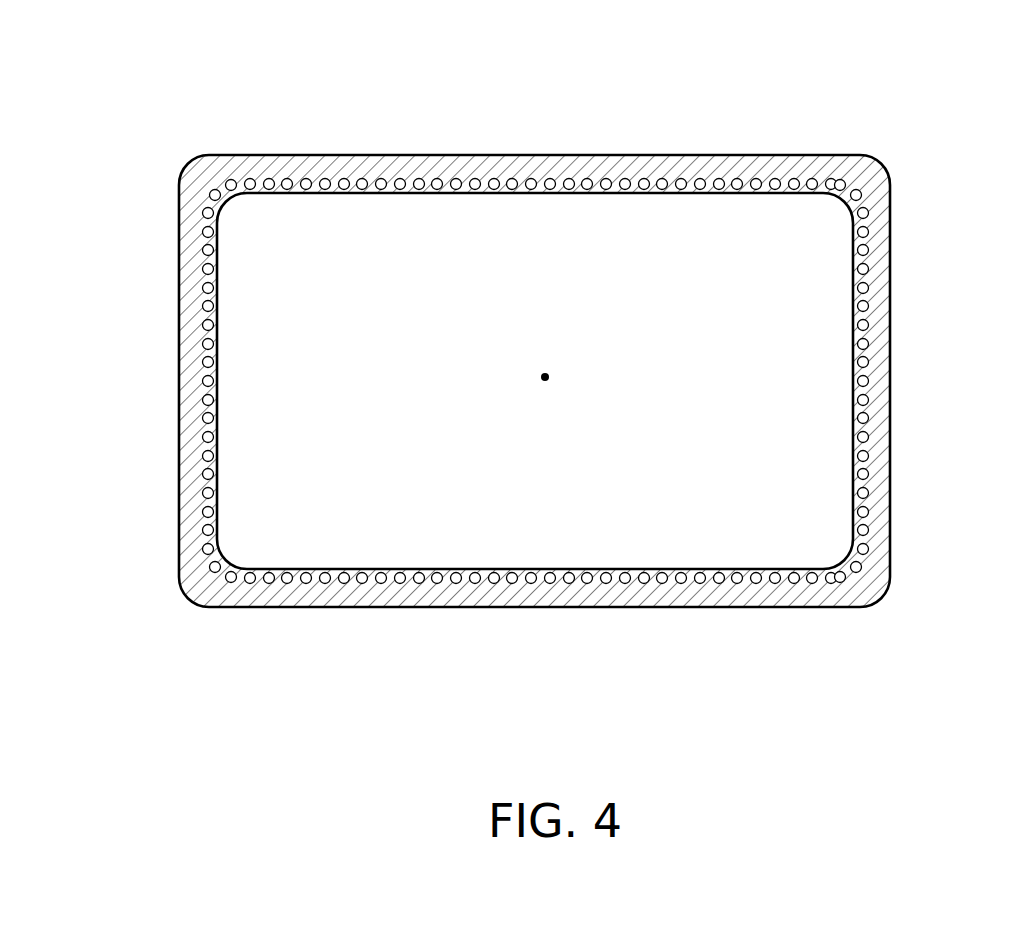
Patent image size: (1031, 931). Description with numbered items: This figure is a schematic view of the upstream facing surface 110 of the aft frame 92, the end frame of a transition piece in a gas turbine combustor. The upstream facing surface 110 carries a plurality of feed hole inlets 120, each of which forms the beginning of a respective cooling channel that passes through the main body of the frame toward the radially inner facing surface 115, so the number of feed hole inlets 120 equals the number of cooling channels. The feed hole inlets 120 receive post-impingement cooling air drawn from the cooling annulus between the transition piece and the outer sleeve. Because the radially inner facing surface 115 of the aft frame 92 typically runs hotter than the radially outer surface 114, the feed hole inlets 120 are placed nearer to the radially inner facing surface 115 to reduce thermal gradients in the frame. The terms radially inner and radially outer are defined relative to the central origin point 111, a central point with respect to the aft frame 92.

The aft frame 92 is at (293, 99).
The upstream facing surface 110 is at (864, 168).
The central origin point 111 is at (548, 380).
The radially outer surface 114 is at (505, 155).
The radially inner facing surface 115 is at (853, 300).
The feed hole inlets 120 is at (719, 184).